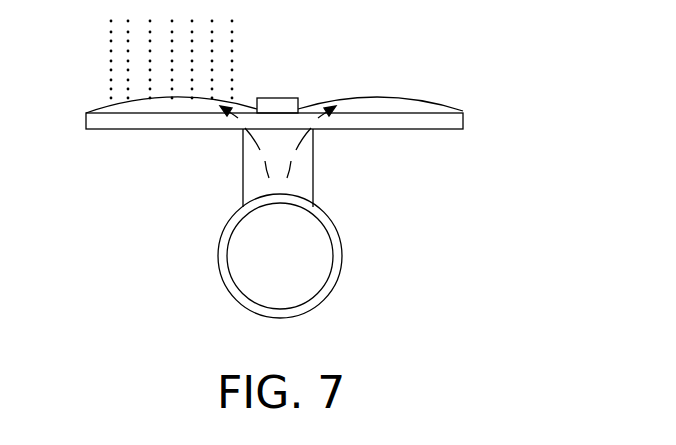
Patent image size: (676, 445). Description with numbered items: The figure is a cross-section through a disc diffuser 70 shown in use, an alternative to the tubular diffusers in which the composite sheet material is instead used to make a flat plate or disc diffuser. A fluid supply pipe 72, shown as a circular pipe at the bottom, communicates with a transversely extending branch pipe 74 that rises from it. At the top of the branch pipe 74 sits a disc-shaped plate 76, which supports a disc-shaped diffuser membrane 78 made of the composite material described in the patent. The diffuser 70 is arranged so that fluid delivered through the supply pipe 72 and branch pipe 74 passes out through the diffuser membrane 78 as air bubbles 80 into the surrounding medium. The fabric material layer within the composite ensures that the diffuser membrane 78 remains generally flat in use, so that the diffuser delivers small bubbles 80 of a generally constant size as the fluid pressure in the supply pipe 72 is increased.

The disc diffuser 70 is at (476, 99).
The fluid supply pipe 72 is at (317, 258).
The branch pipe 74 is at (306, 173).
The disc-shaped plate 76 is at (460, 121).
The diffuser membrane 78 is at (388, 97).
The air bubbles 80 is at (125, 50).